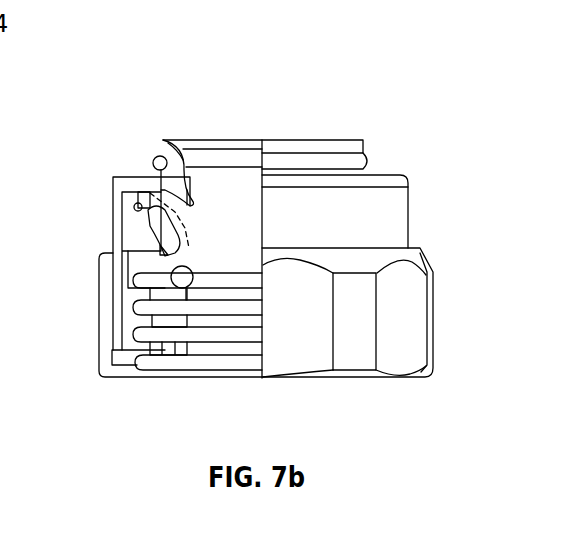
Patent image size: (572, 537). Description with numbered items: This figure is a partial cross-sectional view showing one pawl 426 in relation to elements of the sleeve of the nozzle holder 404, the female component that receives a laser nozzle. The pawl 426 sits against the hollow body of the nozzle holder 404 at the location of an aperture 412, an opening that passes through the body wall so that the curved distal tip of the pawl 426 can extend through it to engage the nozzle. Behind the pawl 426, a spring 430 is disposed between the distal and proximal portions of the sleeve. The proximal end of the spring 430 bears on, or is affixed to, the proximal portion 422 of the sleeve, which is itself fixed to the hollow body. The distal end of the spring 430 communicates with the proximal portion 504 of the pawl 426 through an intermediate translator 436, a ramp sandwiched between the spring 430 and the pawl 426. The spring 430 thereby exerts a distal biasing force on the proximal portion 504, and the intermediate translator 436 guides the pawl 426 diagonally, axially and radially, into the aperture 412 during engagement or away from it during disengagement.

The nozzle holder 404 is at (320, 58).
The aperture 412 is at (192, 204).
The pawl 426 is at (175, 212).
The proximal portion 504 is at (141, 206).
The intermediate translator 436 is at (141, 238).
The spring 430 is at (165, 338).
The proximal portion 422 is at (109, 353).